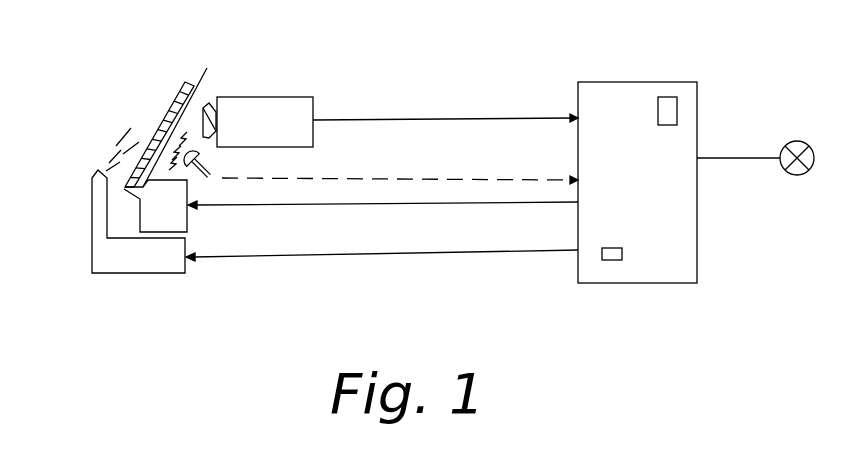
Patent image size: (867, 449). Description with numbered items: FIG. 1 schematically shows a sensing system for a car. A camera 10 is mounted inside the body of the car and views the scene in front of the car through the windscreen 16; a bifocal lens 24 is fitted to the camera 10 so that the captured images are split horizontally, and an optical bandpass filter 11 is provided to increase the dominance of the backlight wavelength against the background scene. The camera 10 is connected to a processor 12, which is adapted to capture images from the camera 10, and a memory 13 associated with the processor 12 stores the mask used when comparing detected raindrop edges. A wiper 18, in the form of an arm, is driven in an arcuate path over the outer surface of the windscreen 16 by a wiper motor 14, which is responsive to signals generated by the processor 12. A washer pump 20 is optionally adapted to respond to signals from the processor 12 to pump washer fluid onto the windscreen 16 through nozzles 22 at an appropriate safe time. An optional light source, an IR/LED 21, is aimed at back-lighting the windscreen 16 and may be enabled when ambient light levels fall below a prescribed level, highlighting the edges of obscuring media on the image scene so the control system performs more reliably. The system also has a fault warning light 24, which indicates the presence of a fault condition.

The camera 10 is at (292, 96).
The optical bandpass filter 11 is at (205, 105).
The processor 12 is at (634, 82).
The memory 13 is at (678, 108).
The wiper motor 14 is at (190, 193).
The windscreen 16 is at (210, 90).
The wiper 18 is at (168, 102).
The washer pump 20 is at (157, 274).
The IR/LED 21 is at (204, 153).
The nozzles 22 is at (98, 172).
The fault warning light 24 is at (793, 173).